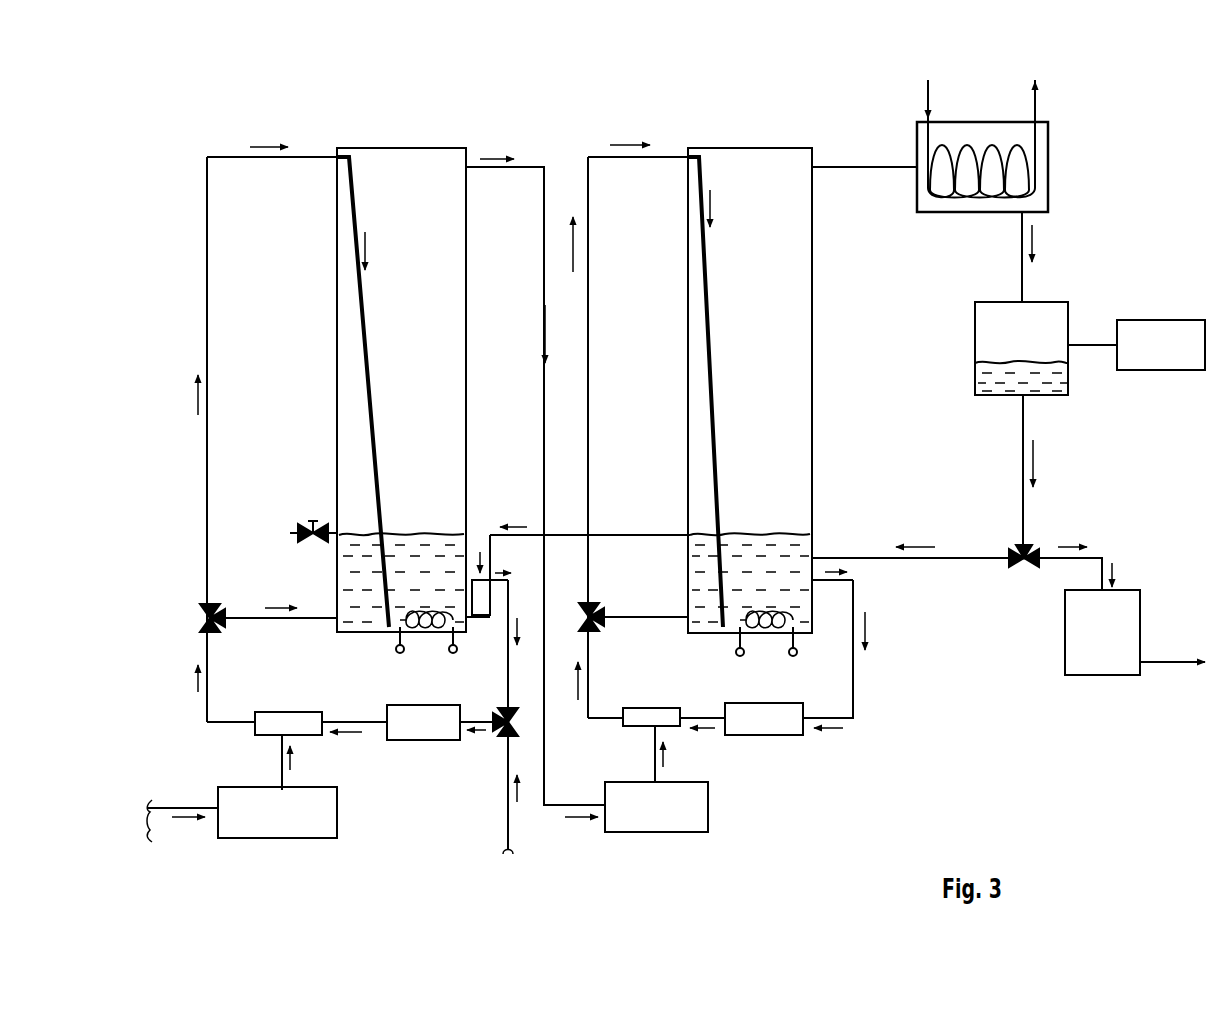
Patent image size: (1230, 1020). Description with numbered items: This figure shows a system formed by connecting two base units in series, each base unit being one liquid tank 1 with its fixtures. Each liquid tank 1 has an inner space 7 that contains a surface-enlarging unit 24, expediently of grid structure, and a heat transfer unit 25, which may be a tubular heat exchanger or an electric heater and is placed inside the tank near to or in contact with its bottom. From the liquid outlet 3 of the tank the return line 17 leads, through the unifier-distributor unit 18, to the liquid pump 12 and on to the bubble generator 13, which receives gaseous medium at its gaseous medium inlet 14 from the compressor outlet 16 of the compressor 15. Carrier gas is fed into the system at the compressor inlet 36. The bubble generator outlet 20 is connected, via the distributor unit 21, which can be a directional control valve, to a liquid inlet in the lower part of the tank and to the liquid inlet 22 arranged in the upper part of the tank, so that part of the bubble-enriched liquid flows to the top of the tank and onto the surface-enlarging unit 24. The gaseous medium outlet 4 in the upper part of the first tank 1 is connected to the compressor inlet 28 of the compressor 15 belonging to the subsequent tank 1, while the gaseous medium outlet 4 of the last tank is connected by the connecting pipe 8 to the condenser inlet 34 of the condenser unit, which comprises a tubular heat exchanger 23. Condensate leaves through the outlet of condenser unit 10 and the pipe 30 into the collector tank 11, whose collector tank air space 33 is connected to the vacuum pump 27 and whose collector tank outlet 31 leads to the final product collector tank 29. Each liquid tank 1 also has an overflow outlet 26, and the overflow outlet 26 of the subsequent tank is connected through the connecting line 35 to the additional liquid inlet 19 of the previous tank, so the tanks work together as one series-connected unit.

The liquid tank 1 is at (402, 165).
The liquid outlet 3 is at (472, 580).
The gaseous medium outlet 4 is at (470, 162).
The inner space of the liquid tank 7 is at (401, 480).
The connecting pipe 8 is at (868, 165).
The outlet of condenser unit 10 is at (1020, 214).
The collector tank 11 is at (1045, 320).
The liquid pump 12 is at (422, 740).
The bubble generator 13 is at (293, 712).
The gaseous medium inlet 14 is at (280, 736).
The compressor 15 is at (302, 838).
The compressor outlet 16 is at (282, 787).
The return line 17 is at (508, 678).
The unifier-distributor unit 18 is at (500, 733).
The additional liquid inlet 19 is at (473, 618).
The bubble generator outlet 20 is at (256, 723).
The distributor unit 21 is at (205, 614).
The liquid inlet arranged in the upper part of the tank 22 is at (337, 150).
The tubular heat exchanger 23 is at (978, 125).
The surface-enlarging unit 24 is at (365, 362).
The heat transfer unit 25 is at (407, 640).
The overflow outlet 26 is at (343, 533).
The vacuum pump 27 is at (1155, 335).
The compressor inlet 28 is at (604, 800).
The final product collector tank 29 is at (1097, 675).
The pipe 30 is at (1020, 260).
The collector tank outlet 31 is at (1020, 400).
The collector tank air space 33 is at (1021, 361).
The condenser inlet 34 is at (915, 170).
The connecting line 35 is at (564, 535).
The compressor inlet 36 is at (182, 831).